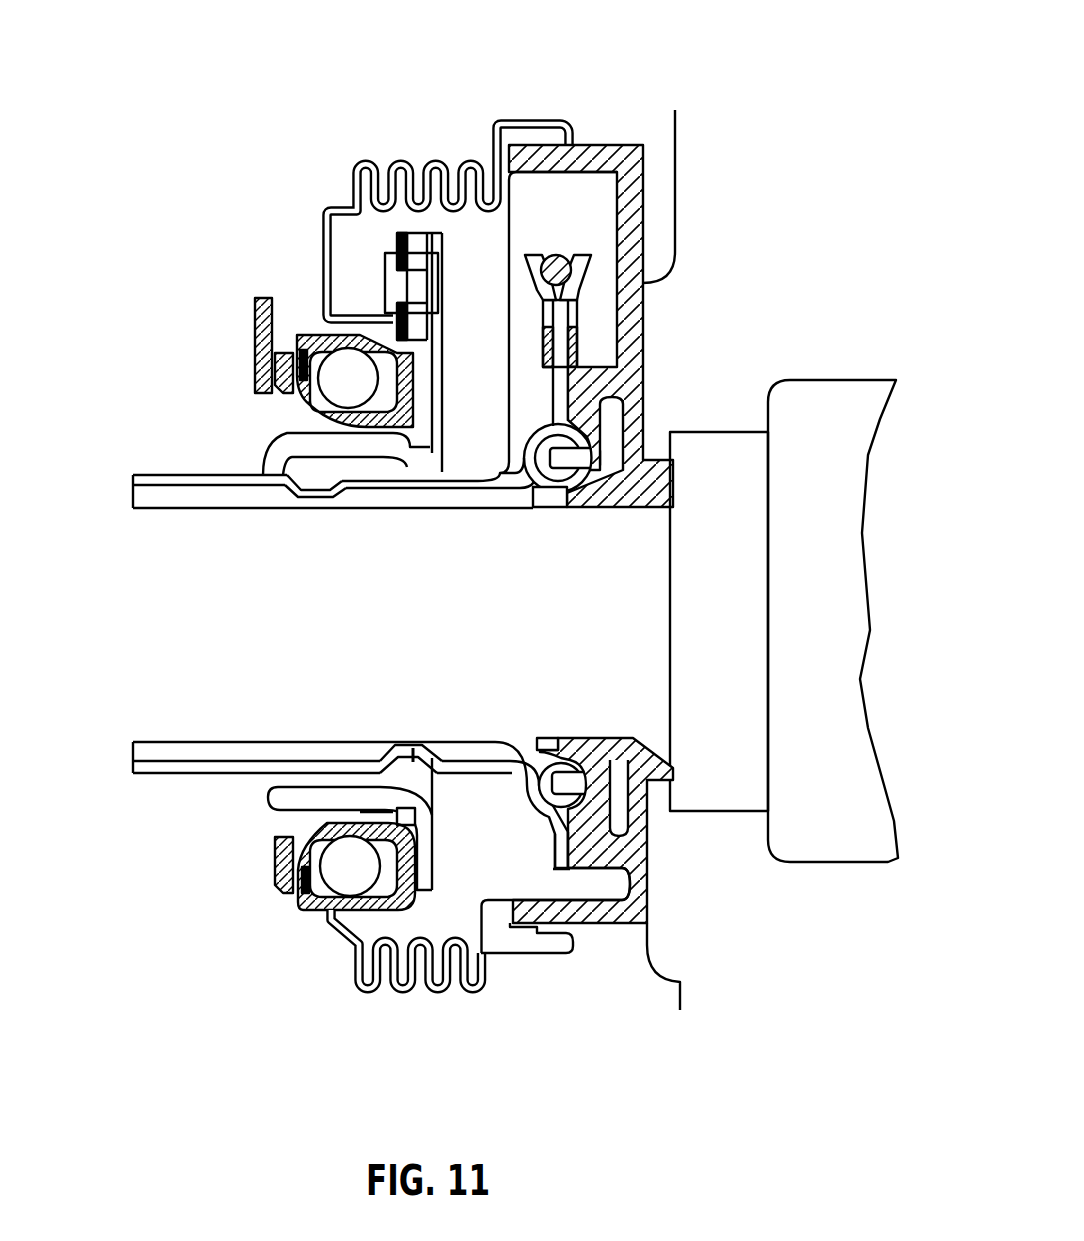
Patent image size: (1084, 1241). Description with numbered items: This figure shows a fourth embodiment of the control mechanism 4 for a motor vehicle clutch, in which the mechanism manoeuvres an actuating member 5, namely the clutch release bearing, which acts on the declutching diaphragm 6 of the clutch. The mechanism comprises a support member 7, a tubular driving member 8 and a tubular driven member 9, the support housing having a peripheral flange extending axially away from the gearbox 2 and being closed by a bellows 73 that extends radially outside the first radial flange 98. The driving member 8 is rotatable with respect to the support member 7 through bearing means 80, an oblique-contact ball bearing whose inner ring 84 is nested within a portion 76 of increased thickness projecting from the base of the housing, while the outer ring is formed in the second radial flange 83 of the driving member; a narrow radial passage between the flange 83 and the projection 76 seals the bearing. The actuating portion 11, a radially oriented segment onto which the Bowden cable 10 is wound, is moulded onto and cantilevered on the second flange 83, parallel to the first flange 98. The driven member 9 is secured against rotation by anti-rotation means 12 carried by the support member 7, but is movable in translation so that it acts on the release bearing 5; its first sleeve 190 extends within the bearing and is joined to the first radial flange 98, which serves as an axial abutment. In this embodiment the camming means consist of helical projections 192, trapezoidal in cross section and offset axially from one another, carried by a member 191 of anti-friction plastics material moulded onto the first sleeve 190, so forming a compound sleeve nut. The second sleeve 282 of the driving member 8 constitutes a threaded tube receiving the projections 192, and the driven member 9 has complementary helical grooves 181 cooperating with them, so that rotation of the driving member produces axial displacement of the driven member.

The gearbox 2 is at (727, 371).
The control mechanism 4 is at (508, 68).
The actuating member 5 is at (308, 330).
The diaphragm 6 is at (244, 336).
The support member 7 is at (606, 144).
The tubular driving member 8 is at (146, 468).
The tubular driven member 9 is at (433, 888).
The Bowden cable 10 is at (567, 255).
The actuating portion 11 is at (572, 330).
The anti-rotation means 12 is at (397, 238).
The bellows 73 is at (388, 995).
The portion of increased thickness 76 is at (603, 870).
The bearing means 80 is at (590, 800).
The second radial flange 83 is at (548, 848).
The inner ring 84 is at (620, 800).
The first radial flange 98 is at (437, 828).
The helical grooves 181 is at (297, 490).
The first sleeve 190 is at (268, 800).
The member 191 is at (308, 762).
The helical projections 192 is at (416, 750).
The second sleeve 282 is at (146, 776).